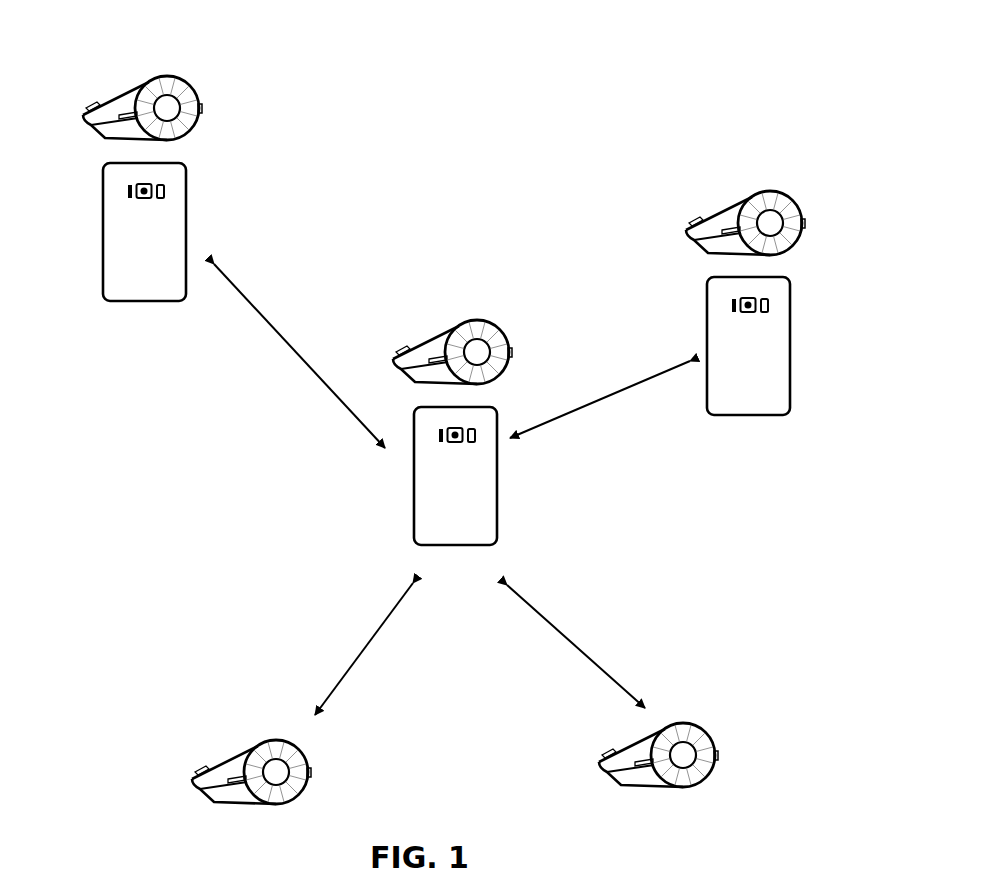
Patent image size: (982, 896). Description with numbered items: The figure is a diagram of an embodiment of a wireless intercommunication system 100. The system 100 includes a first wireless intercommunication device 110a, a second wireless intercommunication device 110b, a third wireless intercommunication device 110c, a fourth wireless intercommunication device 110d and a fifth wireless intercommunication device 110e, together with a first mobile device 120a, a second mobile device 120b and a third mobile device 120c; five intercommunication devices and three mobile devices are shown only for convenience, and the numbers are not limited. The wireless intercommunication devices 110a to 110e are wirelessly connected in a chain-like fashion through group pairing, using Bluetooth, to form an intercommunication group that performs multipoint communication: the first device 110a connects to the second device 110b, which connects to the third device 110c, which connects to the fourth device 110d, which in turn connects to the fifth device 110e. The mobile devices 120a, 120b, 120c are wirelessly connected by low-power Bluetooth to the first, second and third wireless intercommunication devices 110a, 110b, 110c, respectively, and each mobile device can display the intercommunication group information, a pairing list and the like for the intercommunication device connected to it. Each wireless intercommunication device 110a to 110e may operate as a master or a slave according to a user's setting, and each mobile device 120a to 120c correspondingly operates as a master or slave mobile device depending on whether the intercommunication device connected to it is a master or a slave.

The wireless intercommunication system 100 is at (514, 66).
The first wireless intercommunication device 110a is at (418, 343).
The second wireless intercommunication device 110b is at (108, 100).
The third wireless intercommunication device 110c is at (708, 214).
The fourth wireless intercommunication device 110d is at (217, 764).
The fifth wireless intercommunication device 110e is at (623, 747).
The first mobile device 120a is at (497, 503).
The second mobile device 120b is at (187, 217).
The third mobile device 120c is at (789, 353).